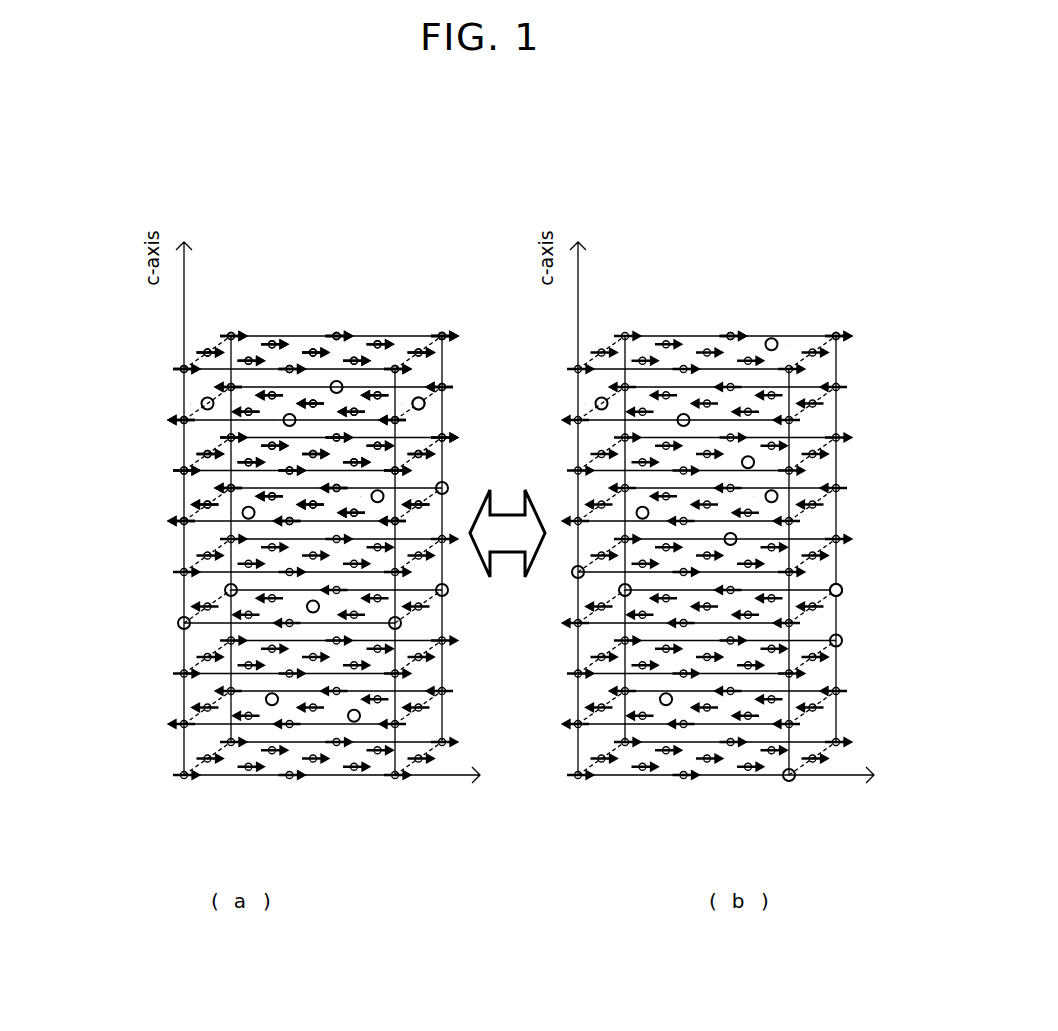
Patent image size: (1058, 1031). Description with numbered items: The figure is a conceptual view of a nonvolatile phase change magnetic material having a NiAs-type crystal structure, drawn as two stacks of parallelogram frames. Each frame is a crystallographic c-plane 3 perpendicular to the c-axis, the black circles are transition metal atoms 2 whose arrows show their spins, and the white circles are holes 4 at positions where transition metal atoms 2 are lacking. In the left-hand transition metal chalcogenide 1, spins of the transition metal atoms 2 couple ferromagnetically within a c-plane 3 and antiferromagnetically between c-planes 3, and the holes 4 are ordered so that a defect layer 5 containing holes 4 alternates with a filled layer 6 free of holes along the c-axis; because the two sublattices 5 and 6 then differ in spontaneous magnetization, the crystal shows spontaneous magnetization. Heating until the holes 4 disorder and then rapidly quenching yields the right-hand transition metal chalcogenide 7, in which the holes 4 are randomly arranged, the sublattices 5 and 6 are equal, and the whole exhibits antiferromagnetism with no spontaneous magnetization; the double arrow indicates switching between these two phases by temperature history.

The transition metal chalcogenide 1 is at (304, 262).
The transition metal atom 2 is at (338, 334).
The crystallographic c-plane 3 is at (101, 300).
The hole 4 is at (424, 403).
The defect layer 5 is at (197, 413).
The filled layer 6 is at (200, 357).
The transition metal chalcogenide with disorderly arranged holes 7 is at (717, 262).